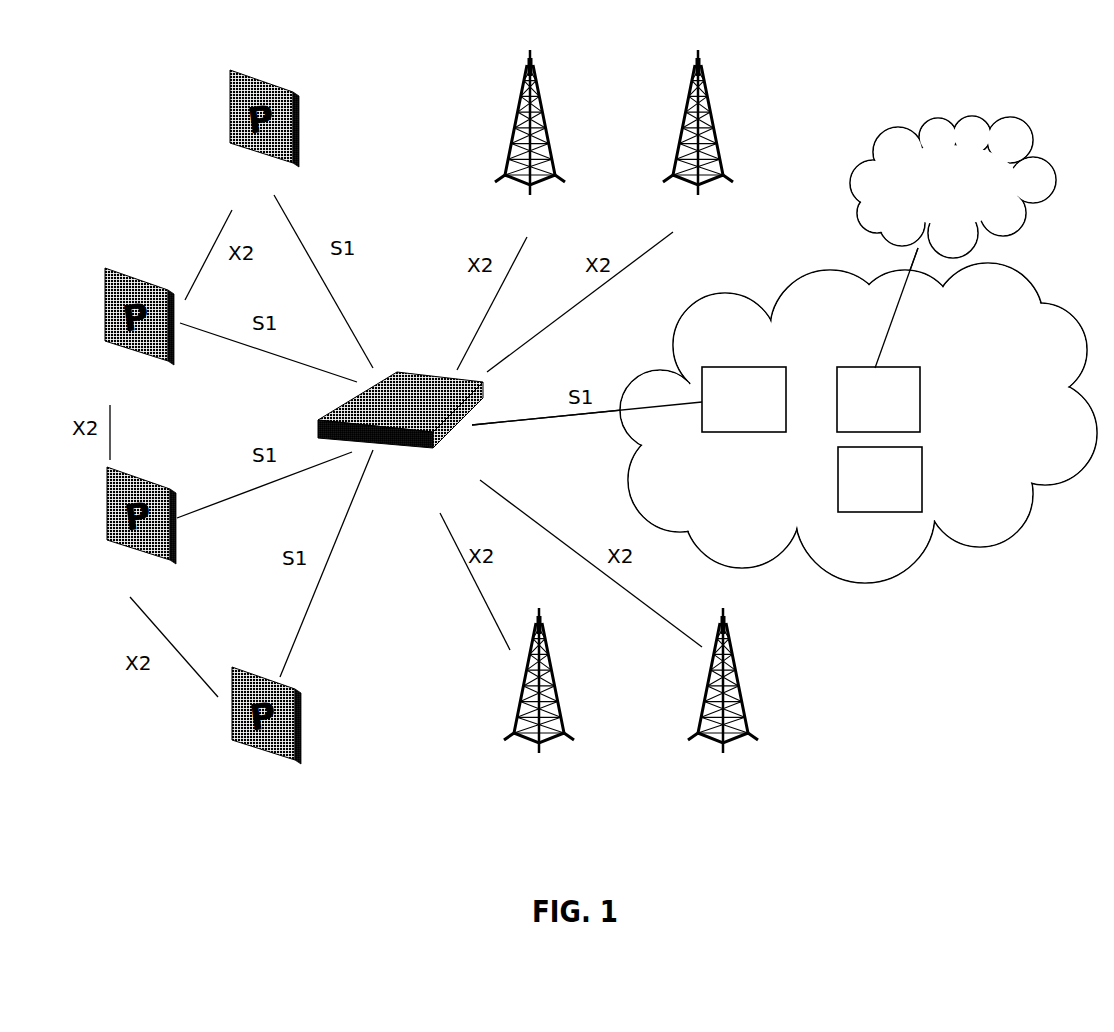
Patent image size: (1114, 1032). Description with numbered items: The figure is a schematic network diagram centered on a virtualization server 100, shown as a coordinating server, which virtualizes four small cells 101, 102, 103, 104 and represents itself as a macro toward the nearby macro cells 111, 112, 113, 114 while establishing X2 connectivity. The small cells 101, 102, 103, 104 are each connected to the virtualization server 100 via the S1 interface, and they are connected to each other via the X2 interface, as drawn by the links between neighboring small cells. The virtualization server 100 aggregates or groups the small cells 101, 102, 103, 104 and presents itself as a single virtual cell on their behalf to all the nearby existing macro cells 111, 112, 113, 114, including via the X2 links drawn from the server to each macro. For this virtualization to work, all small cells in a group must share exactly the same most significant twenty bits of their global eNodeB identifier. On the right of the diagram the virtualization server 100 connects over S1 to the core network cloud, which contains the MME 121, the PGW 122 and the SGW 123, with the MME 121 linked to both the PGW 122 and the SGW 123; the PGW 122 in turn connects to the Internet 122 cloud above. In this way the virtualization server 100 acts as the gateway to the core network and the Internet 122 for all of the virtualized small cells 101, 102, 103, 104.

The virtualization server 100 is at (403, 372).
The small cell 101 is at (265, 77).
The small cell 102 is at (137, 265).
The small cell 103 is at (138, 468).
The small cell 104 is at (233, 667).
The macro cell 111 is at (545, 90).
The macro cell 112 is at (713, 93).
The macro cell 113 is at (553, 638).
The macro cell 114 is at (735, 637).
The MME 121 is at (765, 367).
The PGW 122 is at (902, 367).
The SGW 123 is at (922, 463).